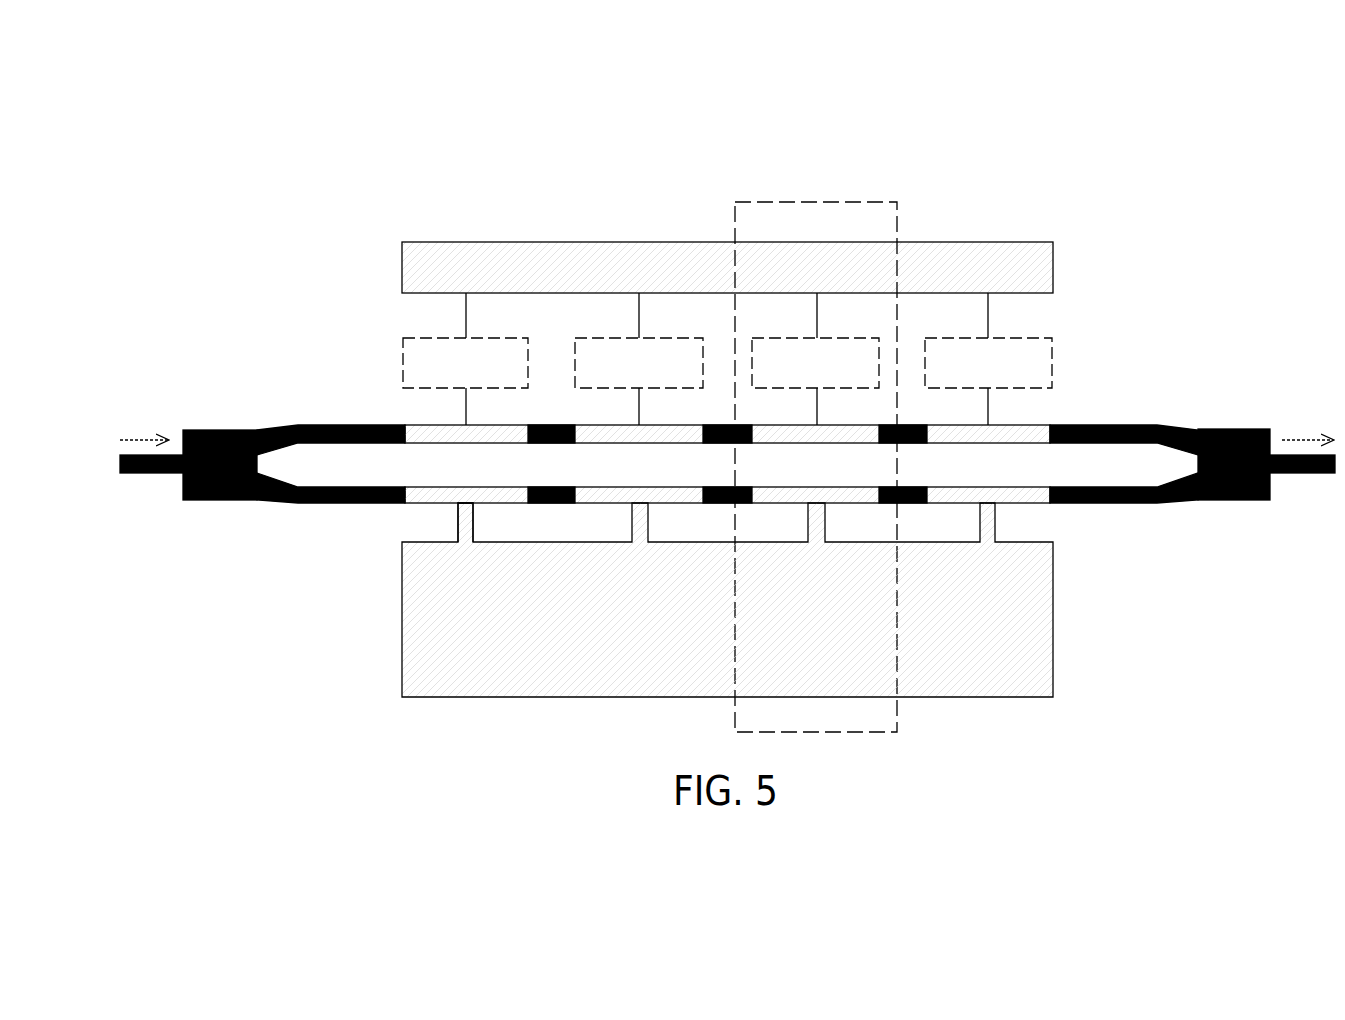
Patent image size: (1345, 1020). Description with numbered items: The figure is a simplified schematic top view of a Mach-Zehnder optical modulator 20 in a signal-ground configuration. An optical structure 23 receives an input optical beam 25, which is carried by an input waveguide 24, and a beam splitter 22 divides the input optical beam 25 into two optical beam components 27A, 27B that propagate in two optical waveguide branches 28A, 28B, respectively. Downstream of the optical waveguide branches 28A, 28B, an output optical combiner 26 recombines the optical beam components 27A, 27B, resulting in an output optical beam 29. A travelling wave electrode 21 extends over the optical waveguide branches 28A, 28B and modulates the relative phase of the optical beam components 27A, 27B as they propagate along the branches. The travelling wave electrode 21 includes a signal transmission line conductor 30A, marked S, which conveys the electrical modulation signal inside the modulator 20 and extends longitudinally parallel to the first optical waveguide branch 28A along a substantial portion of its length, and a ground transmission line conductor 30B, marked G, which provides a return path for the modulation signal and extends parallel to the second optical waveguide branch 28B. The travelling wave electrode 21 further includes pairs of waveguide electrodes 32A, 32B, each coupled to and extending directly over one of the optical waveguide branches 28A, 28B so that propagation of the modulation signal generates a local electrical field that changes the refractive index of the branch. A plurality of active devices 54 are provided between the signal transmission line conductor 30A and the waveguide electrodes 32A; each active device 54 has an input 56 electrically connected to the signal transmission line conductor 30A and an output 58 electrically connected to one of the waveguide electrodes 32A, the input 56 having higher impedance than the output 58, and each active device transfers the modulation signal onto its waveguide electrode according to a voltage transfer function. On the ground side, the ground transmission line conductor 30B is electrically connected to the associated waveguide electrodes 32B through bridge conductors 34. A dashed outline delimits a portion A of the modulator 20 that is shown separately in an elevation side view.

The Mach-Zehnder optical modulator 20 is at (763, 90).
The travelling wave electrode 21 is at (987, 203).
The beam splitter 22 is at (224, 430).
The optical structure 23 is at (1196, 399).
The input waveguide 24 is at (150, 474).
The input optical beam 25 is at (152, 437).
The output optical combiner 26 is at (1240, 500).
The first optical beam component 27A is at (300, 409).
The second optical beam component 27B is at (300, 517).
The first optical waveguide branch 28A is at (1127, 428).
The second optical waveguide branch 28B is at (1115, 500).
The output optical beam 29 is at (1305, 437).
The signal transmission line conductor 30A is at (590, 242).
The ground transmission line conductor 30B is at (490, 698).
The first waveguide electrodes 32A is at (1030, 430).
The second waveguide electrodes 32B is at (1030, 497).
The bridge conductors 34 is at (458, 521).
The active devices 54 is at (415, 362).
The active device input 56 is at (466, 338).
The active device output 58 is at (466, 388).
The portion A is at (855, 202).